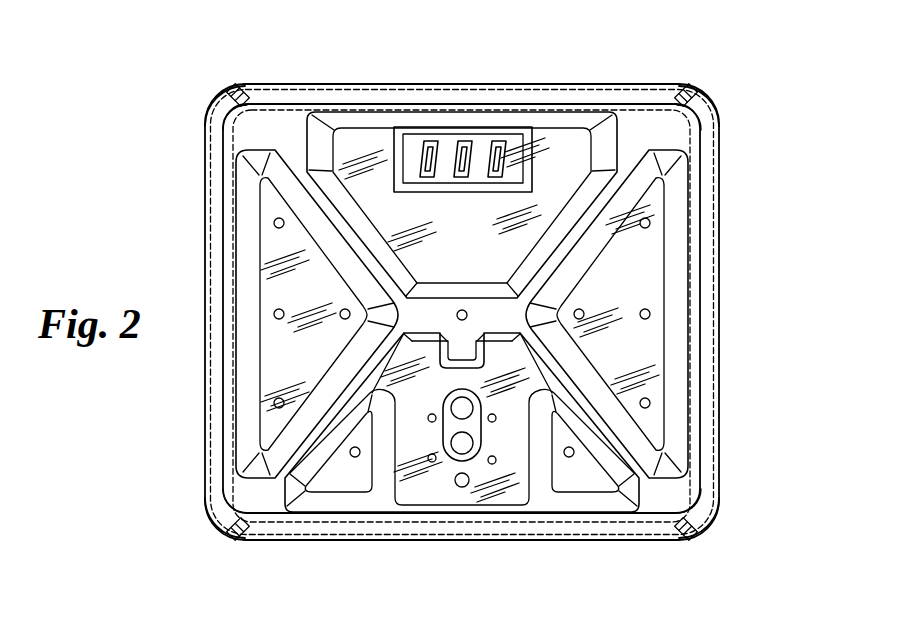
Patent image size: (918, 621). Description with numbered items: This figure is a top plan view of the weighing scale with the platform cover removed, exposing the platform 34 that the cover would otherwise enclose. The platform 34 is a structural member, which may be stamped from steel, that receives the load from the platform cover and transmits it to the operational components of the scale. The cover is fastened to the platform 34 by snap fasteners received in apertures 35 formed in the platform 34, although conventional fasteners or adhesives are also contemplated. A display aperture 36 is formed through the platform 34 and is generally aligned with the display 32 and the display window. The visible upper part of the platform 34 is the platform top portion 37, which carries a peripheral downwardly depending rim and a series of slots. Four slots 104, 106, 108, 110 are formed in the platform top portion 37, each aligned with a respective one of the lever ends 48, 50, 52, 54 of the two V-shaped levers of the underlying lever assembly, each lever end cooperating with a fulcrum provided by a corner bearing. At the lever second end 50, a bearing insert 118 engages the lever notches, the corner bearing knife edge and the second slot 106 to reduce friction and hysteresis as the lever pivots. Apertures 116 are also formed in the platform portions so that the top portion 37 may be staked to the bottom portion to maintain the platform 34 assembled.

The display 32 is at (486, 108).
The platform 34 is at (556, 108).
The apertures 35 is at (646, 221).
The display aperture 36 is at (420, 134).
The platform top portion 37 is at (680, 307).
The lever end 48 is at (228, 87).
The lever end 50 is at (698, 89).
The lever end 52 is at (228, 536).
The lever end 54 is at (692, 540).
The slot 104 is at (243, 90).
The second slot 106 is at (680, 90).
The slot 108 is at (243, 534).
The slot 110 is at (680, 541).
The aperture 116 is at (278, 220).
The bearing insert 118 is at (234, 92).